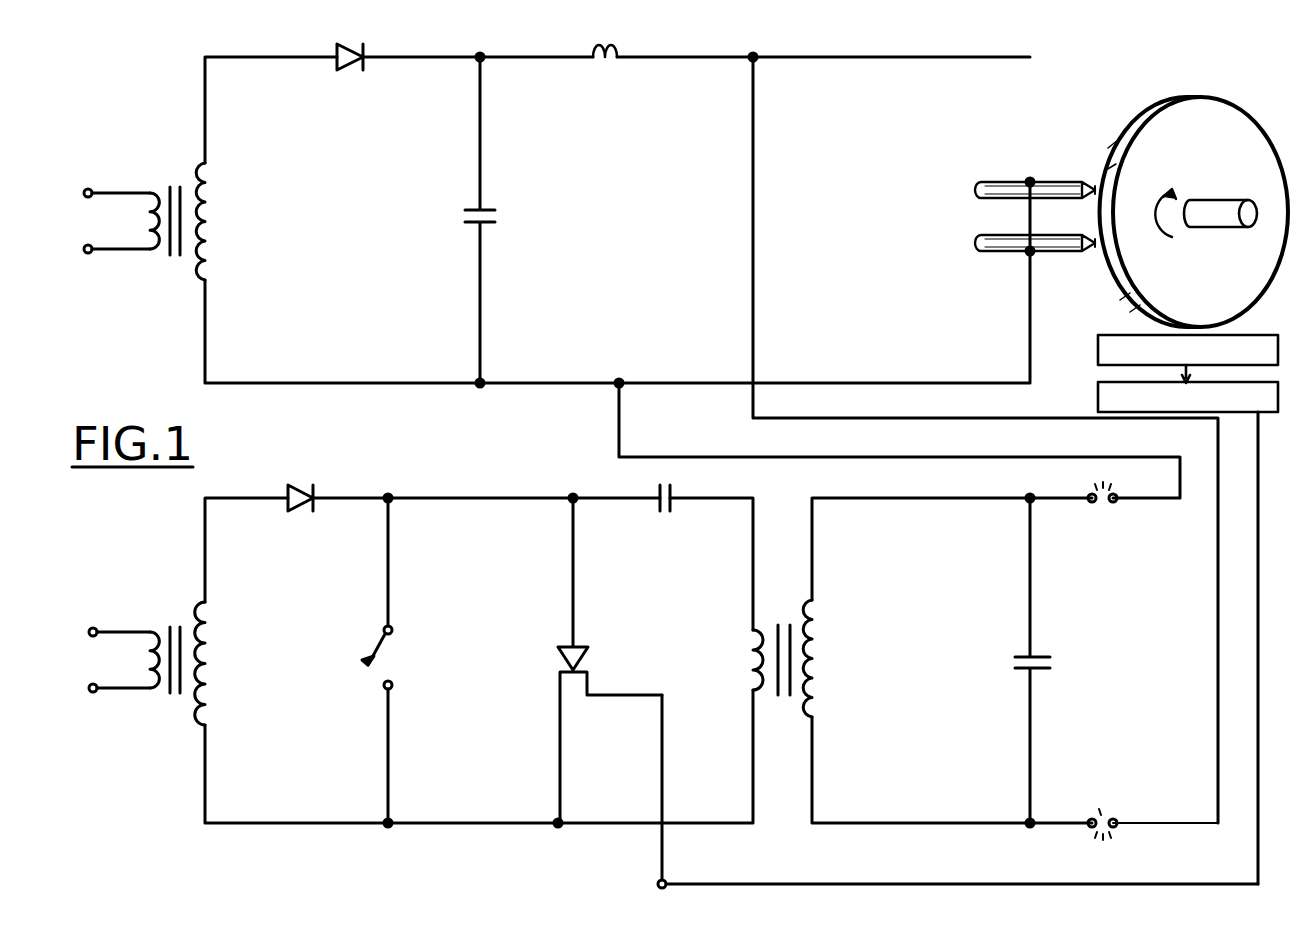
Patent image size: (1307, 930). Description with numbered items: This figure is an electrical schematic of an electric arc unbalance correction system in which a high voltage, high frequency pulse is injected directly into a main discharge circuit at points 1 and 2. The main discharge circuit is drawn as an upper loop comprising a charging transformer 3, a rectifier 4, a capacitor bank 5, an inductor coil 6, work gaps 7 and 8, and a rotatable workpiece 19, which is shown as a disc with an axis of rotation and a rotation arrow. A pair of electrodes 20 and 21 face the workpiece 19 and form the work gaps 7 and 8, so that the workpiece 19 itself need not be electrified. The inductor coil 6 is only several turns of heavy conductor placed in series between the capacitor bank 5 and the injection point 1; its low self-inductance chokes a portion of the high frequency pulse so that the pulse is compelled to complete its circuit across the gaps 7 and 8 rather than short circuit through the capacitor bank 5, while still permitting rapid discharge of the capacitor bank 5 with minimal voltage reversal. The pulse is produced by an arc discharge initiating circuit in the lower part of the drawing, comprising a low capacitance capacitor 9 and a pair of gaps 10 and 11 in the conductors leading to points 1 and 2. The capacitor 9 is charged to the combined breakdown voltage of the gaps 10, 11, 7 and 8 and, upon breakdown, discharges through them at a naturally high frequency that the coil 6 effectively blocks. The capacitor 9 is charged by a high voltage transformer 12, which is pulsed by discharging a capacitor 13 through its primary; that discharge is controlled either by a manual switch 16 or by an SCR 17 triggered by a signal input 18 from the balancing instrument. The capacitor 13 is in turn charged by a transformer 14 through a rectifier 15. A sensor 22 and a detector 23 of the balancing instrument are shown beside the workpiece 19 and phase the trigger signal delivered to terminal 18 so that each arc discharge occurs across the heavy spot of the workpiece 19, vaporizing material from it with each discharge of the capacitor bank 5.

The pulse injection point 1 is at (760, 52).
The pulse injection point 2 is at (620, 380).
The charging transformer 3 is at (172, 262).
The rectifier 4 is at (346, 48).
The capacitor bank 5 is at (485, 207).
The inductor coil 6 is at (620, 44).
The work gap 7 is at (1096, 183).
The work gap 8 is at (1096, 252).
The low capacitance capacitor 9 is at (1040, 655).
The gap 10 is at (1106, 506).
The gap 11 is at (1107, 812).
The high voltage transformer 12 is at (783, 625).
The capacitor 13 is at (660, 508).
The transformer 14 is at (175, 700).
The rectifier 15 is at (298, 488).
The manual switch 16 is at (372, 660).
The SCR 17 is at (558, 652).
The signal input 18 is at (655, 884).
The workpiece 19 is at (1198, 118).
The electrode 20 is at (1012, 178).
The electrode 21 is at (1002, 254).
The sensor 22 is at (1098, 350).
The detector 23 is at (1098, 396).